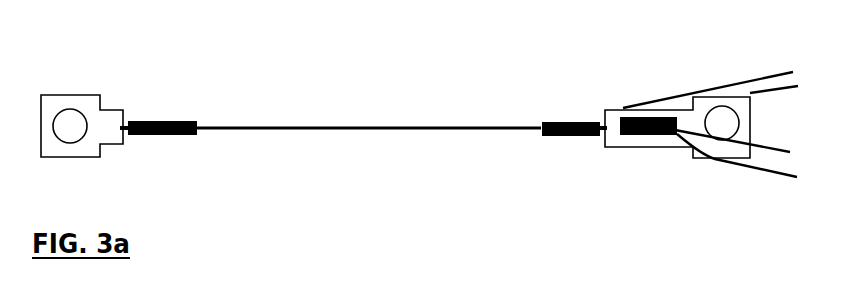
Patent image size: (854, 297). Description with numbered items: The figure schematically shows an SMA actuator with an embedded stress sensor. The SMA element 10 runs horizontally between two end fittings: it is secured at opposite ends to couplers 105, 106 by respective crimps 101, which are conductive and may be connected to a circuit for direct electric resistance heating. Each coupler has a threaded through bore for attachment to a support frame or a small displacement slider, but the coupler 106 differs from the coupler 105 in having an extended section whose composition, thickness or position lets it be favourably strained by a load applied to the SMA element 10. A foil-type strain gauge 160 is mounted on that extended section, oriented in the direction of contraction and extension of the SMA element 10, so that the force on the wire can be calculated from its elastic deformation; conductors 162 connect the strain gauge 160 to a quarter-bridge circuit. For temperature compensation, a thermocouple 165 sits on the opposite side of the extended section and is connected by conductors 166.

The SMA element 10 is at (370, 127).
The crimps 101 is at (162, 135).
The coupler 105 is at (57, 150).
The coupler 106 is at (745, 112).
The strain gauge 160 is at (630, 135).
The conductors 162 is at (755, 155).
The thermocouple 165 is at (662, 110).
The conductors 166 is at (783, 87).